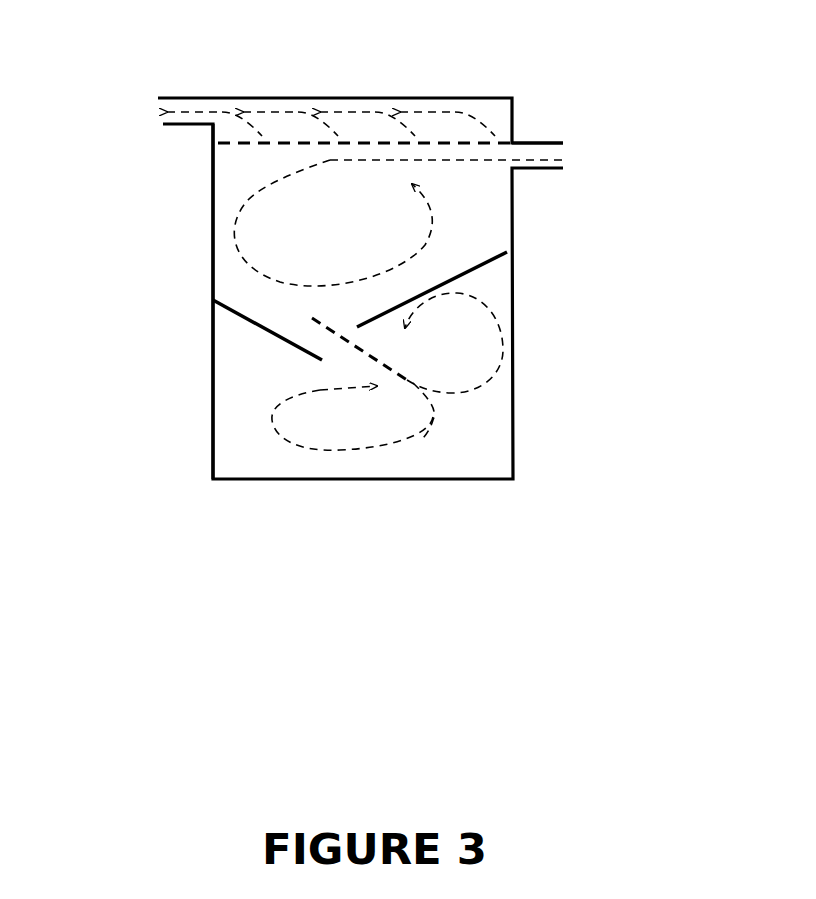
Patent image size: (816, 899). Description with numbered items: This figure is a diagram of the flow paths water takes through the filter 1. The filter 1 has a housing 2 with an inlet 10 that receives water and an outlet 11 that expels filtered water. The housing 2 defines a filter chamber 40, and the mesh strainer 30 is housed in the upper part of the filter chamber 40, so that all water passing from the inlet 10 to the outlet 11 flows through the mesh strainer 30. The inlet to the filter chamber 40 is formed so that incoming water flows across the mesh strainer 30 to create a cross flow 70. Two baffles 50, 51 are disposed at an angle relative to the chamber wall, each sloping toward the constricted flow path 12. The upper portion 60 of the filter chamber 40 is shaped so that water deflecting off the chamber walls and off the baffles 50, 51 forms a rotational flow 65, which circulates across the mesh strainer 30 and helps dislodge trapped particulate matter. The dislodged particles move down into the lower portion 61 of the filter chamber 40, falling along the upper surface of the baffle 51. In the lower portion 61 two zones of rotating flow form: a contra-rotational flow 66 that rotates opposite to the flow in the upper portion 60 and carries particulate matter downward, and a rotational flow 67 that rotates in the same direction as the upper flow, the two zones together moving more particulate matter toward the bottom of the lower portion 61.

The filter 1 is at (682, 392).
The housing 2 is at (213, 333).
The inlet 10 is at (545, 143).
The outlet 11 is at (157, 108).
The constricted flow path 12 is at (332, 352).
The mesh strainer 30 is at (470, 142).
The filter chamber 40 is at (278, 222).
The baffle 50 is at (457, 272).
The baffle 51 is at (273, 330).
The upper portion of the filter chamber 60 is at (327, 241).
The lower portion of the filter chamber 61 is at (363, 430).
The rotational flow 65 is at (310, 287).
The contra-rotational flow 66 is at (468, 395).
The rotational flow 67 is at (422, 437).
The cross flow 70 is at (330, 160).